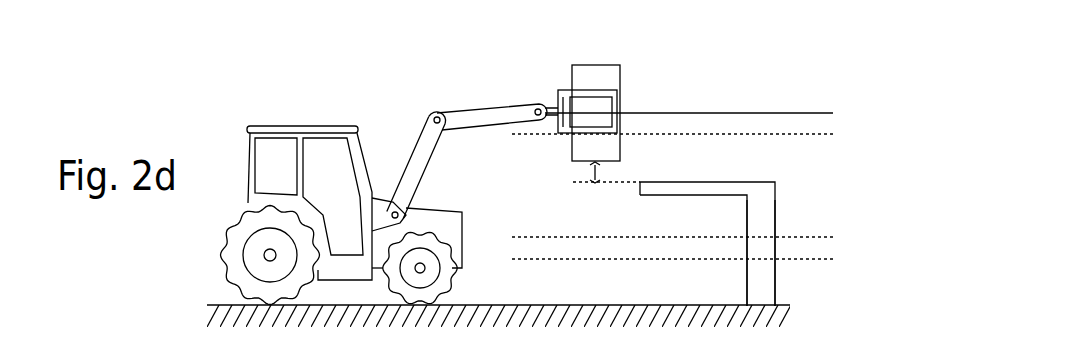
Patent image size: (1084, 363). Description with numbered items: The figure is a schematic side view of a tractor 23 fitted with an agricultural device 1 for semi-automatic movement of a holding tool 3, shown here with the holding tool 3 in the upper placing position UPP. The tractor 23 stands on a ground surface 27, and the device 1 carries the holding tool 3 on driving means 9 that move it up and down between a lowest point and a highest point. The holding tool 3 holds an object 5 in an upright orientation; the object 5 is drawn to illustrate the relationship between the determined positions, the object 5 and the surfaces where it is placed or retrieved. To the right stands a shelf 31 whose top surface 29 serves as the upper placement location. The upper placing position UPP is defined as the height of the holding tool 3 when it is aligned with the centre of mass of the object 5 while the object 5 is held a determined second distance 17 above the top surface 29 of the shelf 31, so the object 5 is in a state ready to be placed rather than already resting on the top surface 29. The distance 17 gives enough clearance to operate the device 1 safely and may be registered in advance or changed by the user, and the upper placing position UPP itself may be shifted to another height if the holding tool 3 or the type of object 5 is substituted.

The agricultural device 1 is at (420, 110).
The holding tool 3 is at (562, 103).
The object 5 is at (596, 112).
The driving means 9 is at (401, 185).
The second distance 17 is at (574, 175).
The tractor 23 is at (262, 112).
The ground surface 27 is at (227, 304).
The top surface 29 is at (767, 182).
The shelf 31 is at (765, 275).
The upper placing position UPP is at (813, 113).